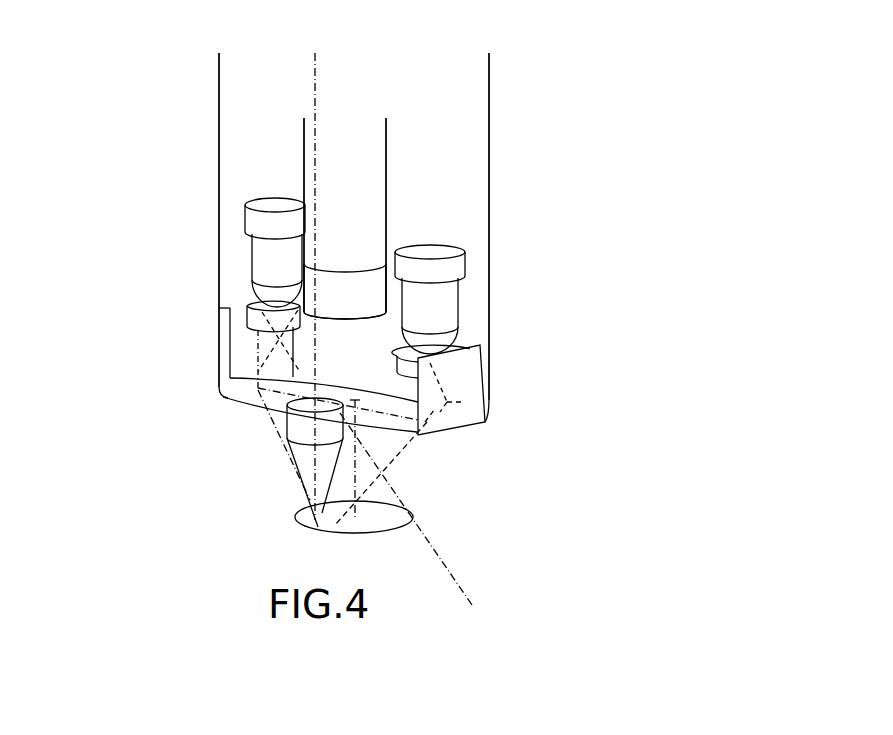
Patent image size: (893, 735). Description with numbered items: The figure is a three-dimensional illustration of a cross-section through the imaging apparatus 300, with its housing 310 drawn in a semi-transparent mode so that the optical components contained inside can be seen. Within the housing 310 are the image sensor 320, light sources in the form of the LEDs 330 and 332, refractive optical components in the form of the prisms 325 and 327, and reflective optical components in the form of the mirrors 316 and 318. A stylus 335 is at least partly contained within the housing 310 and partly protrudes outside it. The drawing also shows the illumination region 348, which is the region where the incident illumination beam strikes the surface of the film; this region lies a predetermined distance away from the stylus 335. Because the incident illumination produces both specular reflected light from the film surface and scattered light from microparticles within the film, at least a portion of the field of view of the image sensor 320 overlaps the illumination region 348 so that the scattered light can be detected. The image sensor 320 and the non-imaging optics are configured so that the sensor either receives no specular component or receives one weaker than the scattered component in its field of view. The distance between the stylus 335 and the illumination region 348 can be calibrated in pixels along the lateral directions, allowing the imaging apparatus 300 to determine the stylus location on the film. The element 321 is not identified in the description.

The imaging apparatus 300 is at (102, 48).
The housing 310 is at (218, 136).
The image sensor 320 is at (388, 148).
The window 321 is at (347, 297).
The LED 332 is at (246, 243).
The LED 330 is at (468, 300).
The prism 327 is at (246, 307).
The mirror 318 is at (228, 355).
The prism 325 is at (409, 354).
The mirror 316 is at (459, 404).
The stylus 335 is at (342, 473).
The illumination region 348 is at (419, 518).